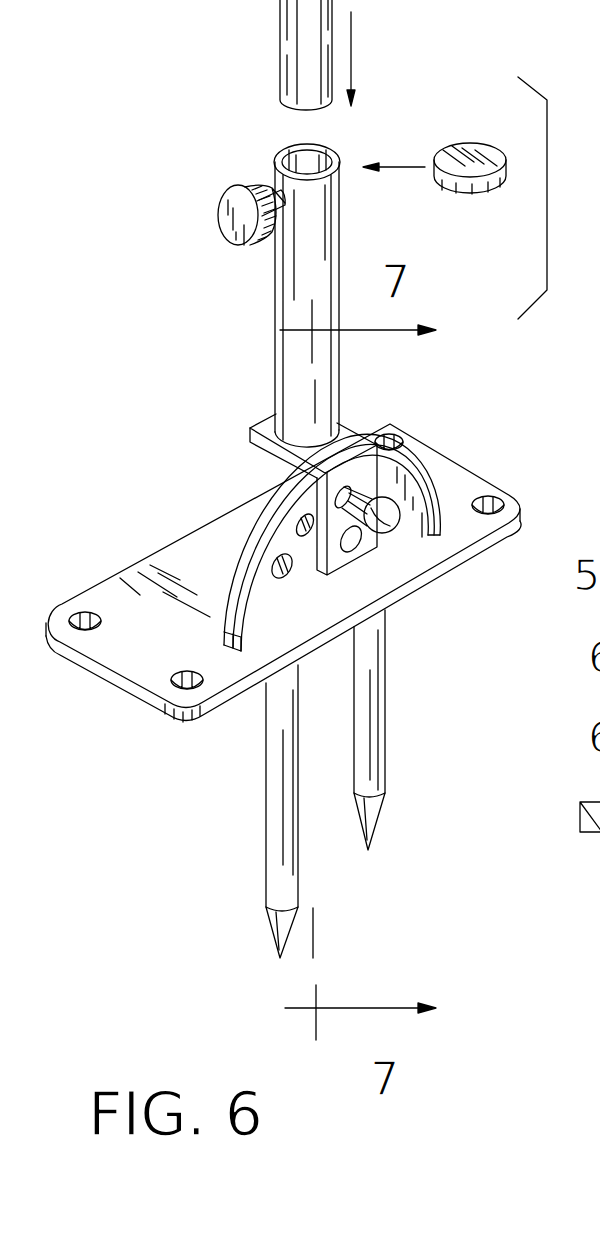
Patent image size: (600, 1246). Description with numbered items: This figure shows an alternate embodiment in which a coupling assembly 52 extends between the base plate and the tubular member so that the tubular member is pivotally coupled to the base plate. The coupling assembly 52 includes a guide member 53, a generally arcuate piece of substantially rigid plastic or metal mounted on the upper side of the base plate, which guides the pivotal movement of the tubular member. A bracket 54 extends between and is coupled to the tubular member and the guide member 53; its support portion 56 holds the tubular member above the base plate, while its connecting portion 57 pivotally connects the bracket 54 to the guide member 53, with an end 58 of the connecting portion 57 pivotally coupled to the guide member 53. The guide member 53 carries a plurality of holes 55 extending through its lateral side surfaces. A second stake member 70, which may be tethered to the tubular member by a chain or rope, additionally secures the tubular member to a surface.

The coupling assembly 52 is at (168, 450).
The guide member 53 is at (226, 603).
The bracket 54 is at (398, 434).
The holes 55 is at (277, 585).
The support portion 56 is at (352, 443).
The connecting portion 57 is at (370, 540).
The end 58 is at (355, 558).
The second stake member 70 is at (387, 733).